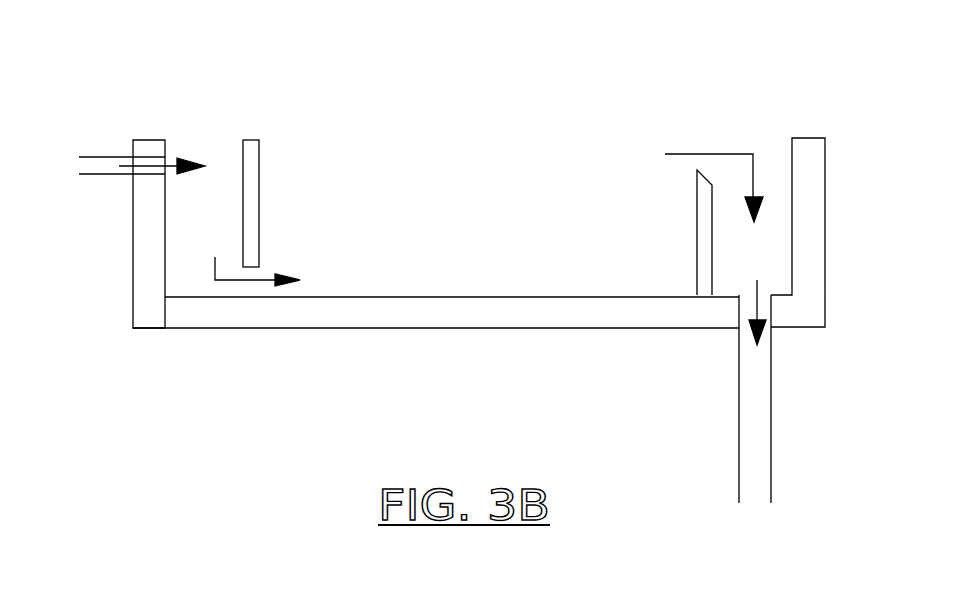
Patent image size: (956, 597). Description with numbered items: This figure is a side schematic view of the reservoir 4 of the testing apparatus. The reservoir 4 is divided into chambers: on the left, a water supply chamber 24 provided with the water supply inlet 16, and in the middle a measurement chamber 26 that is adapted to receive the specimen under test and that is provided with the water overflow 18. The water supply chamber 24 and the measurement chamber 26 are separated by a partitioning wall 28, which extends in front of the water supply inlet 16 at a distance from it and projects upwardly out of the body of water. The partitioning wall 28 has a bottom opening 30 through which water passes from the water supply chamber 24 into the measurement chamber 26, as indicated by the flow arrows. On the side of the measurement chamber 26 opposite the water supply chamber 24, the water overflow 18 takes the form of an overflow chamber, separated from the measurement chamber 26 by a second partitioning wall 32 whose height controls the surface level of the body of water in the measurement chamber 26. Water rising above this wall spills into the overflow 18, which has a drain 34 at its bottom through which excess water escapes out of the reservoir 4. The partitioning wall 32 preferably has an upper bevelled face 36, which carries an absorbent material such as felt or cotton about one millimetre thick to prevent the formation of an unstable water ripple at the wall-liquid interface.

The reservoir 4 is at (297, 375).
The water supply inlet 16 is at (150, 158).
The water overflow 18 is at (760, 142).
The water supply chamber 24 is at (215, 143).
The measurement chamber 26 is at (483, 157).
The partitioning wall 28 is at (255, 167).
The bottom opening 30 is at (257, 277).
The partitioning wall 32 is at (697, 243).
The drain 34 is at (745, 308).
The upper bevelled face 36 is at (707, 180).